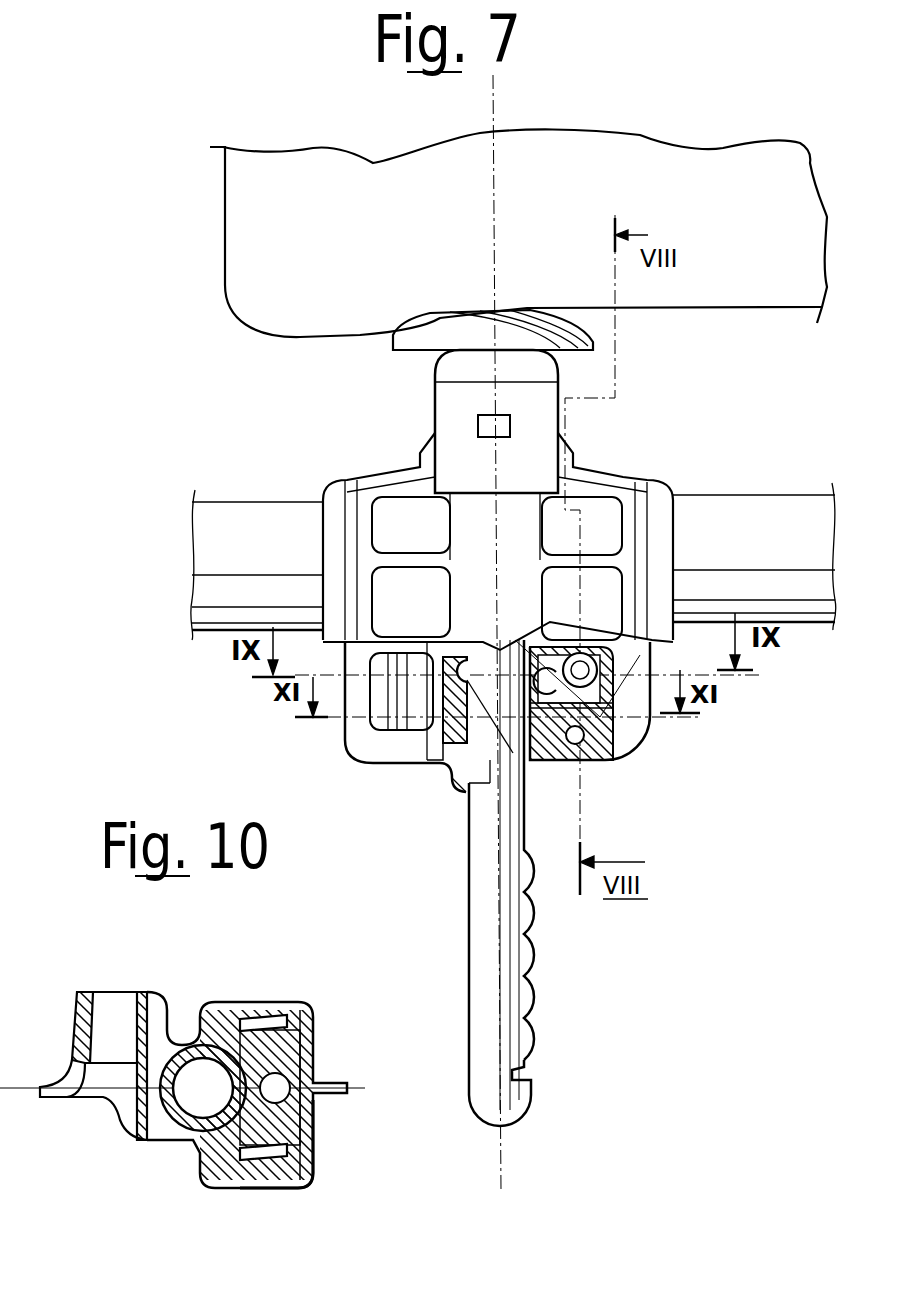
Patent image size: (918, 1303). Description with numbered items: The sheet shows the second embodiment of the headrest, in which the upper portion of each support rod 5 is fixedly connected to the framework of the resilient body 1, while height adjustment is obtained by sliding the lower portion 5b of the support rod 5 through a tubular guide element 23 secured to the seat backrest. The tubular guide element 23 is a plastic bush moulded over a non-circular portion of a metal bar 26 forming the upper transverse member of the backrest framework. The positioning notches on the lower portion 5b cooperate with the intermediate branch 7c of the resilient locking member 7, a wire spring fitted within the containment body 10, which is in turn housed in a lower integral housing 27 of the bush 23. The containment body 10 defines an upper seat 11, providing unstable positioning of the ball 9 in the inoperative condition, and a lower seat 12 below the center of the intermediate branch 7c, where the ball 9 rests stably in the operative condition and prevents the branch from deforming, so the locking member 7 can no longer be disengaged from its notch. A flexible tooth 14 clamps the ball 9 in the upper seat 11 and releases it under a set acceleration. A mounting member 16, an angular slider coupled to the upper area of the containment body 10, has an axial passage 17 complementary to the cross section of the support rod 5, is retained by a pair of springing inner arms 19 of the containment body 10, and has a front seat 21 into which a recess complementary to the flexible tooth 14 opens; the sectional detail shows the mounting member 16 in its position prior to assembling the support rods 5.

In FIG. 7, the resilient body 1 is at (245, 243).
In FIG. 7, the support rod 5 is at (533, 318).
In FIG. 7, the lower portion 5b is at (480, 883).
In FIG. 7, the resilient locking member 7 is at (620, 733).
In FIG. 10, the resilient locking member 7 is at (247, 1090).
In FIG. 7, the intermediate branch 7c is at (460, 783).
In FIG. 7, the ball 9 is at (583, 643).
In FIG. 10, the ball 9 is at (313, 1107).
In FIG. 7, the containment body 10 is at (600, 763).
In FIG. 10, the containment body 10 is at (315, 1163).
In FIG. 7, the upper seat 11 is at (643, 657).
In FIG. 7, the lower seat 12 is at (582, 772).
In FIG. 7, the flexible tooth 14 is at (543, 643).
In FIG. 10, the flexible tooth 14 is at (220, 1000).
In FIG. 7, the mounting member 16 is at (440, 673).
In FIG. 10, the mounting member 16 is at (193, 1023).
In FIG. 7, the axial passage 17 is at (483, 650).
In FIG. 10, the axial passage 17 is at (170, 1015).
In FIG. 10, the retaining springing inner arms 19 is at (258, 1000).
In FIG. 10, the front seat 21 is at (290, 1072).
In FIG. 7, the tubular guide element 23 is at (611, 468).
In FIG. 7, the metal bar 26 is at (755, 517).
In FIG. 7, the lower integral housing 27 is at (447, 723).
In FIG. 10, the lower integral housing 27 is at (313, 1147).